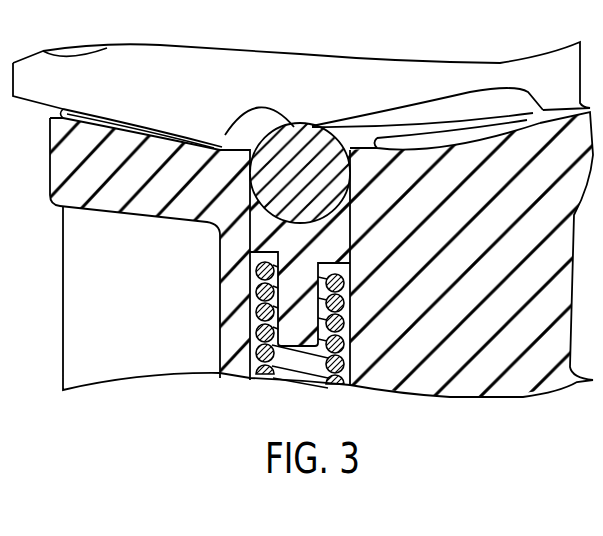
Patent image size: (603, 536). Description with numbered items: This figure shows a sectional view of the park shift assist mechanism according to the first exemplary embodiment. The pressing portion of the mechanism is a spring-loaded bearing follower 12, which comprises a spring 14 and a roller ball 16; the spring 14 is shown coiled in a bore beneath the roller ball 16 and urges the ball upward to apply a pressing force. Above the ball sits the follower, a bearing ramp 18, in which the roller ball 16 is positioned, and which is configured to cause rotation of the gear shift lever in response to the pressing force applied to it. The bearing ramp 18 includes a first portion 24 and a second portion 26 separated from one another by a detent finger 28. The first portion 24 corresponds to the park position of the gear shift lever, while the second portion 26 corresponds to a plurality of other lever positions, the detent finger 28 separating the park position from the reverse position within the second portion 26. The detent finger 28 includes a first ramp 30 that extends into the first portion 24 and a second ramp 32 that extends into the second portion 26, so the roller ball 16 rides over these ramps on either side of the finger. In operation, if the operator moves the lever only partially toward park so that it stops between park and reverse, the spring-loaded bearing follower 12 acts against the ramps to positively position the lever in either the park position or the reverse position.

The spring-loaded bearing follower 12 is at (245, 290).
The spring 14 is at (345, 389).
The roller ball 16 is at (265, 150).
The bearing ramp 18 is at (442, 99).
The first portion 24 is at (247, 116).
The second portion 26 is at (376, 118).
The detent finger 28 is at (315, 124).
The first ramp 30 is at (271, 112).
The second ramp 32 is at (342, 115).